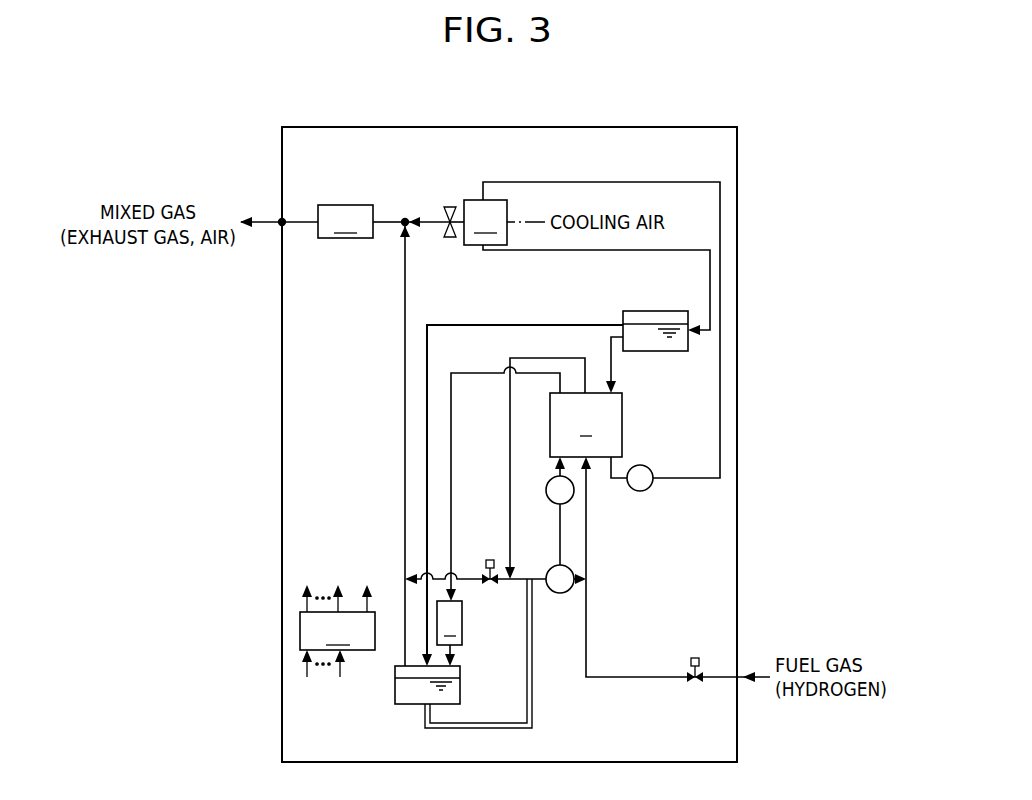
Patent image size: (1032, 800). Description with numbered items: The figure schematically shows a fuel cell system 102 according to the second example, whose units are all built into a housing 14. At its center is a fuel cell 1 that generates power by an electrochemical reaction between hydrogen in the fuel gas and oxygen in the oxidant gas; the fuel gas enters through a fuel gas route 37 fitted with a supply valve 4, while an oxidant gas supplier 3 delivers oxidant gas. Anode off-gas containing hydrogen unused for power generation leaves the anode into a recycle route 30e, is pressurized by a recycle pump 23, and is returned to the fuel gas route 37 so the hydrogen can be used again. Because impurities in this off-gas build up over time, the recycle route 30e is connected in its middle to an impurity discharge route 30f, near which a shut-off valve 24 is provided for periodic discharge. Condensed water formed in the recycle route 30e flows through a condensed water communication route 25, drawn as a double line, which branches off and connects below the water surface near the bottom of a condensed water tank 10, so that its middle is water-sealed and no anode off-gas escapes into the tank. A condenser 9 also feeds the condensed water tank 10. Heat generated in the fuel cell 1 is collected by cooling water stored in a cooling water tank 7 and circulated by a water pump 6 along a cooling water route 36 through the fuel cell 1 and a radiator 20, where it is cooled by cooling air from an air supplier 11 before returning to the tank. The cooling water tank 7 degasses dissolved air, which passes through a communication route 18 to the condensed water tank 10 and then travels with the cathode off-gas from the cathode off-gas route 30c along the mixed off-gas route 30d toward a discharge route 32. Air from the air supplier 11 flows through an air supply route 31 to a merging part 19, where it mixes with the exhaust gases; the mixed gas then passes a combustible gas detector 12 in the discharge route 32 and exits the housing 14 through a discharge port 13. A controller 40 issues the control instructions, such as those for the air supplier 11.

The fuel cell 1 is at (586, 425).
The oxidant gas supplier 3 is at (547, 485).
The supply valve 4 is at (695, 658).
The water pump 6 is at (643, 491).
The cooling water tank 7 is at (655, 311).
The condenser 9 is at (449, 633).
The condensed water tank 10 is at (461, 683).
The air supplier 11 is at (450, 205).
The combustible gas detector 12 is at (345, 221).
The discharge port 13 is at (284, 220).
The housing 14 is at (737, 313).
The communication route 18 is at (505, 325).
The merging part 19 is at (405, 216).
The radiator 20 is at (485, 222).
The recycle pump 23 is at (548, 570).
The shut-off valve 24 is at (490, 560).
The condensed water communication route 25 is at (533, 640).
The cathode off-gas route 30c is at (452, 465).
The mixed off-gas route 30d is at (406, 497).
The recycle route 30e is at (510, 438).
The impurity discharge route 30f is at (482, 585).
The air supply route 31 is at (427, 225).
The discharge route 32 is at (356, 224).
The cooling water route 36 is at (720, 408).
The fuel gas route 37 is at (587, 637).
The controller 40 is at (337, 631).
The fuel cell system 102 is at (688, 165).